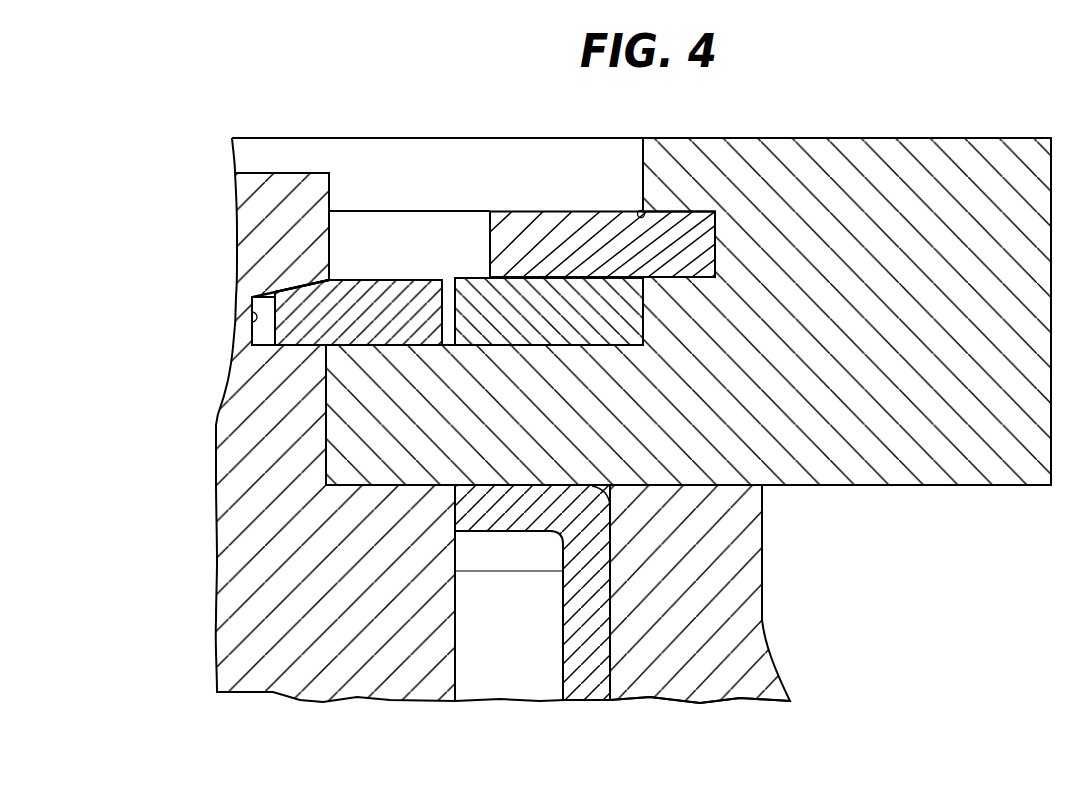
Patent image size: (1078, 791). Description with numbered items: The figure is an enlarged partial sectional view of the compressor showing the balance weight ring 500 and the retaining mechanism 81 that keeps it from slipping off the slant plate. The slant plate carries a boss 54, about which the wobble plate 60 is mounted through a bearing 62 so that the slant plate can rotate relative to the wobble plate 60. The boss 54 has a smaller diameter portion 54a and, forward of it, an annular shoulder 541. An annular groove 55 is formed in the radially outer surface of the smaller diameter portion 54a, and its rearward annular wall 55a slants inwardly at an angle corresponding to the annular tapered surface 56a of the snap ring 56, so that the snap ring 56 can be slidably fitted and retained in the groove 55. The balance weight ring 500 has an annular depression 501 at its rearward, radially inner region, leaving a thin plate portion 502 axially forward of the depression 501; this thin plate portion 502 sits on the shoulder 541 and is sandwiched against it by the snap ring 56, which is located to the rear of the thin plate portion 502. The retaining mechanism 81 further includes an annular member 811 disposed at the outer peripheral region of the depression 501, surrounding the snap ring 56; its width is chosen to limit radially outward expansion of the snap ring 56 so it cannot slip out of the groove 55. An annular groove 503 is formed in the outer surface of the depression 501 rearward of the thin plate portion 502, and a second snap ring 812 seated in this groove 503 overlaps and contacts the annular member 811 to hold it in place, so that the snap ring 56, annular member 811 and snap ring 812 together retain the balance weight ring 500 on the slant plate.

The balance weight ring 500 is at (904, 476).
The annular depression 501 is at (477, 187).
The thin plate portion 502 is at (331, 450).
The annular groove 503 is at (640, 210).
The boss 54 is at (393, 690).
The smaller diameter portion 54a is at (295, 184).
The annular shoulder 541 is at (420, 478).
The annular groove 55 is at (250, 329).
The rearward annular wall 55a is at (302, 283).
The snap ring 56 is at (413, 283).
The annular tapered surface 56a is at (335, 278).
The wobble plate 60 is at (733, 619).
The bearing 62 is at (518, 680).
The balance weight ring retaining mechanism 81 is at (580, 217).
The annular member 811 is at (478, 285).
The snap ring 812 is at (552, 214).